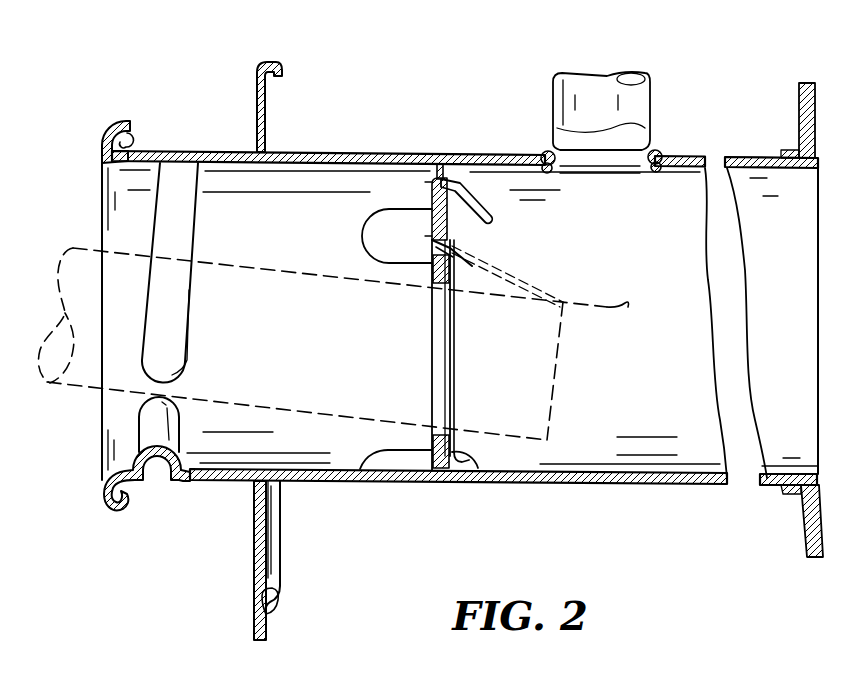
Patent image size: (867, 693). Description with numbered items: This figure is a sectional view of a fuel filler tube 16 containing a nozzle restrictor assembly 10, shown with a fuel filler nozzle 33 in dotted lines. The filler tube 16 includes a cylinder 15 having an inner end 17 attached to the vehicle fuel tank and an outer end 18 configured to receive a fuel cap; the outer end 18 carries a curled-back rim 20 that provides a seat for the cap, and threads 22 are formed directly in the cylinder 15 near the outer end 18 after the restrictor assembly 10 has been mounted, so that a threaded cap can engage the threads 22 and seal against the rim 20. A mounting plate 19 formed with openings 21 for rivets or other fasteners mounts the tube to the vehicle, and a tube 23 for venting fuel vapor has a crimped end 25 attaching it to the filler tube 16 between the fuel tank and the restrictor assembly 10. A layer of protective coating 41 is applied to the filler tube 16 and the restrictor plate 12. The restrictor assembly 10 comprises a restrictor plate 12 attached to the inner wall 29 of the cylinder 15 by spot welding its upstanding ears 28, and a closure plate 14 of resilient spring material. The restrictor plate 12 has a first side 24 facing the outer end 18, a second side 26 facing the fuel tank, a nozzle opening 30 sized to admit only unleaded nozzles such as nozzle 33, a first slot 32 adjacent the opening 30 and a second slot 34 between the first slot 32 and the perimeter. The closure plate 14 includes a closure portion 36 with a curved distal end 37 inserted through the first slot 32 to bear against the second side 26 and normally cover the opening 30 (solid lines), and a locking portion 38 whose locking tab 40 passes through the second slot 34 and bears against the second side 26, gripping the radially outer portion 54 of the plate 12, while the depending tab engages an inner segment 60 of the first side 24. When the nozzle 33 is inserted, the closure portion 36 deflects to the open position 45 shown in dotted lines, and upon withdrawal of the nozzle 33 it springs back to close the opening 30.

The nozzle restrictor assembly 10 is at (481, 186).
The restrictor plate 12 is at (418, 183).
The closure plate 14 is at (472, 357).
The cylinder 15 is at (232, 150).
The fuel filler tube 16 is at (379, 96).
The inner end 17 is at (765, 144).
The outer end 18 is at (84, 156).
The mounting plate 19 is at (273, 109).
The curled-back rim 20 is at (118, 123).
The openings 21 is at (274, 594).
The threads 22 is at (173, 178).
The tube 23 is at (631, 110).
The first side 24 is at (431, 447).
The crimped end 25 is at (654, 150).
The second side 26 is at (470, 482).
The upstanding ears 28 is at (373, 238).
The inner wall 29 is at (590, 492).
The nozzle opening 30 is at (441, 396).
The first slot 32 is at (447, 241).
The fuel filler nozzle 33 is at (267, 232).
The second slot 34 is at (460, 238).
The closure portion 36 is at (449, 358).
The curved distal end 37 is at (463, 453).
The locking portion 38 is at (419, 198).
The locking tab 40 is at (463, 187).
The layer of protective coating 41 is at (116, 510).
The open position outline 45 is at (603, 301).
The radially outer portion 54 is at (441, 172).
The inner segment 60 is at (437, 293).